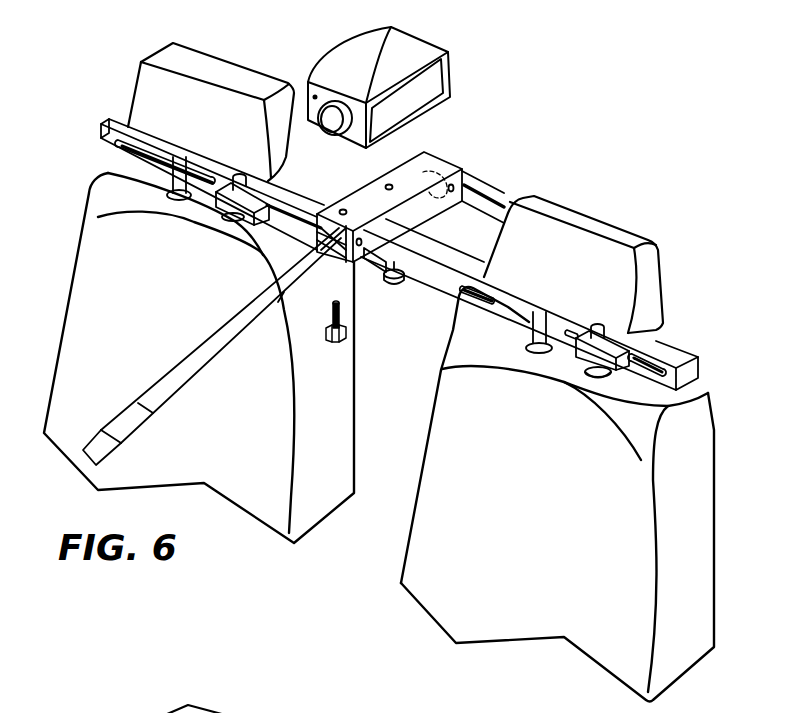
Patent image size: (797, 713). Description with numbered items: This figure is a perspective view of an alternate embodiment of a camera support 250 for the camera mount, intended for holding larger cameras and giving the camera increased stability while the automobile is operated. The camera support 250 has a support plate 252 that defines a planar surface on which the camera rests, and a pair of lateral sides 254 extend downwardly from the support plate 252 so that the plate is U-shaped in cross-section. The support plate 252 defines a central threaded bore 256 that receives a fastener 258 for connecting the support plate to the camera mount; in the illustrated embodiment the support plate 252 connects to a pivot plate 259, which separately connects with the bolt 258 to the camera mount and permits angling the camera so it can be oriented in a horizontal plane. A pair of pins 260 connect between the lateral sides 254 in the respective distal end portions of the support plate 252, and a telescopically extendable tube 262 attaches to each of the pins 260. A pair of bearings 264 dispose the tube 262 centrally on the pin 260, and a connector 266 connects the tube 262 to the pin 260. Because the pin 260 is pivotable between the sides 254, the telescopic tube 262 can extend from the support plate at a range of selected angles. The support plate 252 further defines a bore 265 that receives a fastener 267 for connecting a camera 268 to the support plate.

The camera support 250 is at (456, 134).
The support plate 252 is at (438, 163).
The lateral sides 254 is at (396, 290).
The central threaded bore 256 is at (387, 184).
The fastener 258 is at (391, 285).
The pivot plate 259 is at (460, 322).
The pins 260 is at (468, 186).
The telescopically extendable tube 262 is at (165, 378).
The bearings 264 is at (316, 240).
The bore 265 is at (263, 182).
The connector 266 is at (298, 298).
The fastener 267 is at (327, 350).
The camera 268 is at (397, 43).